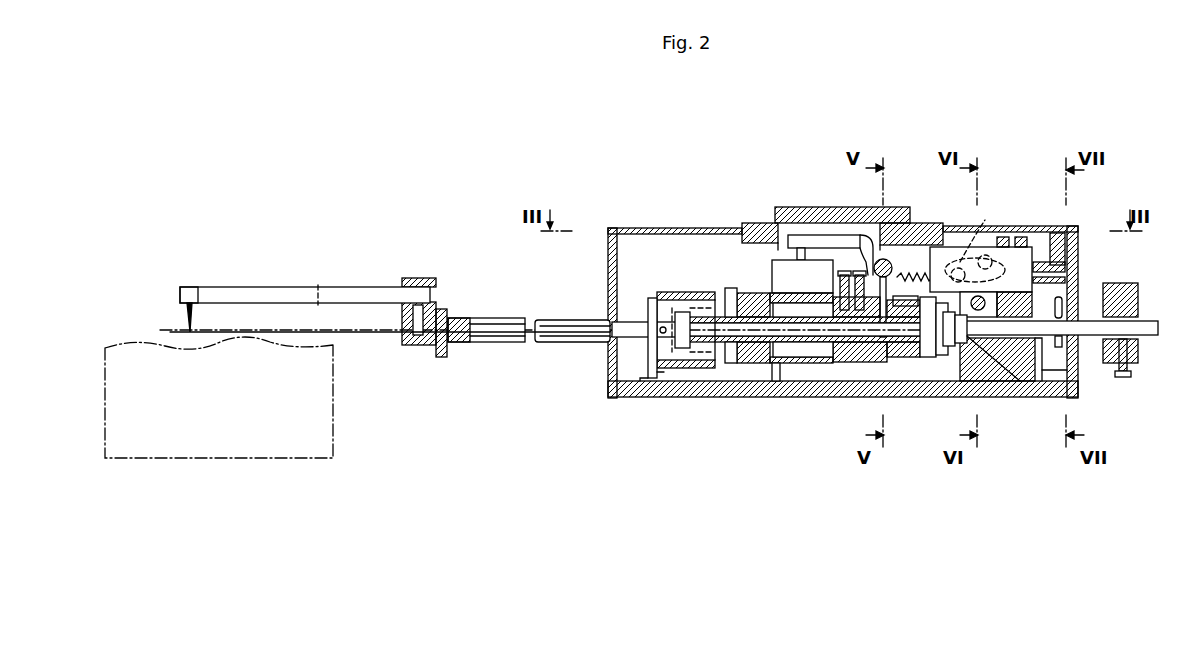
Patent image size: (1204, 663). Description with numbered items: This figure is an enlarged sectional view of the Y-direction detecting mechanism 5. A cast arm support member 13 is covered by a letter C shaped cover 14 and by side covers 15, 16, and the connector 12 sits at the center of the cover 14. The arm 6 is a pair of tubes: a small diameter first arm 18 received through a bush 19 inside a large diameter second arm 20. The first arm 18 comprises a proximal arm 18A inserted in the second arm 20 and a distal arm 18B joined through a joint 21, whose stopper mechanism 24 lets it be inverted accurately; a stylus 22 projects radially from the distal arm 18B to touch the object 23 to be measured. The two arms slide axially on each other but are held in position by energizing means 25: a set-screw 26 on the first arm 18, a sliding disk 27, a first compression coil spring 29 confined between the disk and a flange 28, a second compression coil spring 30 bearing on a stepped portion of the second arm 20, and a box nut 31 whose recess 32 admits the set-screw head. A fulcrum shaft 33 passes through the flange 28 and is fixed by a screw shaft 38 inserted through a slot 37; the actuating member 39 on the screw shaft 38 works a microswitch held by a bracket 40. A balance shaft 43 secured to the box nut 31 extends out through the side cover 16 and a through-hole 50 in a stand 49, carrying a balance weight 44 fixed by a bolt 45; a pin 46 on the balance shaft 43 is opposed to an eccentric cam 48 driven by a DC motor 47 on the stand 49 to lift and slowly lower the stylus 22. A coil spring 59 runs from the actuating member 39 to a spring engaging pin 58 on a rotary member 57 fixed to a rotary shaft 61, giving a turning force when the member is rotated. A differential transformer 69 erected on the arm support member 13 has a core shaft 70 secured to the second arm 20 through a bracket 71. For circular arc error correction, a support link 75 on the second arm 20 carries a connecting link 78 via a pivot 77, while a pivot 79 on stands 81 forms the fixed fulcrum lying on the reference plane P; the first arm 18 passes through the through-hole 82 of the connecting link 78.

The Y-direction detecting mechanism 5 is at (840, 298).
The arm 6 is at (483, 342).
The connector 12 is at (770, 223).
The arm support member 13 is at (731, 385).
The cover 14 is at (727, 228).
The side cover 15 is at (610, 242).
The side cover 16 is at (1076, 250).
The first arm 18 is at (787, 349).
The proximal arm 18A is at (540, 338).
The distal arm 18B is at (358, 283).
The bush 19 is at (826, 303).
The second arm 20 is at (845, 362).
The joint 21 is at (413, 345).
The stylus 22 is at (193, 318).
The object to be measured 23 is at (333, 410).
The stopper mechanism 24 is at (438, 352).
The energizing means 25 is at (961, 370).
The set-screw 26 is at (960, 342).
The sliding disk 27 is at (942, 342).
The flange 28 is at (912, 295).
The first compression coil spring 29 is at (905, 355).
The second compression coil spring 30 is at (928, 350).
The box nut 31 is at (990, 345).
The recess 32 is at (997, 359).
The fulcrum shaft 33 is at (880, 347).
The slot 37 is at (860, 271).
The screw shaft 38 is at (890, 263).
The actuating member 39 is at (886, 258).
The bracket 40 is at (844, 271).
The balance shaft 43 is at (1150, 321).
The balance weight 44 is at (1138, 290).
The bolt 45 is at (1129, 374).
The pin 46 is at (1062, 300).
The DC motor 47 is at (1040, 262).
The eccentric cam 48 is at (1058, 233).
The stand 49 is at (1062, 370).
The through-hole 50 is at (1036, 350).
The rotary member 57 is at (1021, 237).
The spring engaging pin 58 is at (966, 231).
The coil spring 59 is at (915, 272).
The rotary shaft 61 is at (998, 296).
The differential transformer 69 is at (772, 278).
The core shaft 70 is at (797, 255).
The bracket 71 is at (820, 240).
The support link 75 is at (731, 290).
The pivot 77 is at (698, 292).
The connecting link 78 is at (700, 368).
The pivot 79 is at (663, 335).
The stands 81 is at (650, 375).
The through-hole 82 is at (650, 300).
The reference plane P is at (358, 337).